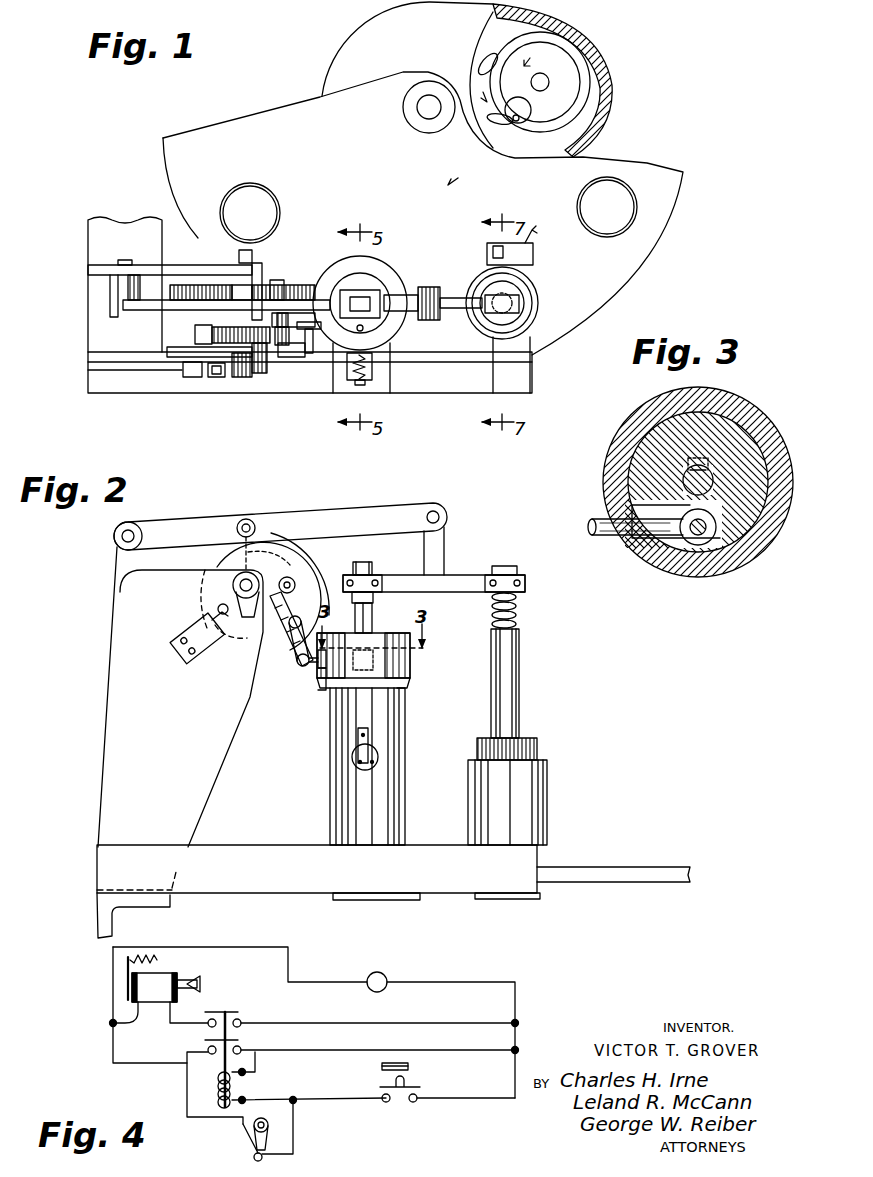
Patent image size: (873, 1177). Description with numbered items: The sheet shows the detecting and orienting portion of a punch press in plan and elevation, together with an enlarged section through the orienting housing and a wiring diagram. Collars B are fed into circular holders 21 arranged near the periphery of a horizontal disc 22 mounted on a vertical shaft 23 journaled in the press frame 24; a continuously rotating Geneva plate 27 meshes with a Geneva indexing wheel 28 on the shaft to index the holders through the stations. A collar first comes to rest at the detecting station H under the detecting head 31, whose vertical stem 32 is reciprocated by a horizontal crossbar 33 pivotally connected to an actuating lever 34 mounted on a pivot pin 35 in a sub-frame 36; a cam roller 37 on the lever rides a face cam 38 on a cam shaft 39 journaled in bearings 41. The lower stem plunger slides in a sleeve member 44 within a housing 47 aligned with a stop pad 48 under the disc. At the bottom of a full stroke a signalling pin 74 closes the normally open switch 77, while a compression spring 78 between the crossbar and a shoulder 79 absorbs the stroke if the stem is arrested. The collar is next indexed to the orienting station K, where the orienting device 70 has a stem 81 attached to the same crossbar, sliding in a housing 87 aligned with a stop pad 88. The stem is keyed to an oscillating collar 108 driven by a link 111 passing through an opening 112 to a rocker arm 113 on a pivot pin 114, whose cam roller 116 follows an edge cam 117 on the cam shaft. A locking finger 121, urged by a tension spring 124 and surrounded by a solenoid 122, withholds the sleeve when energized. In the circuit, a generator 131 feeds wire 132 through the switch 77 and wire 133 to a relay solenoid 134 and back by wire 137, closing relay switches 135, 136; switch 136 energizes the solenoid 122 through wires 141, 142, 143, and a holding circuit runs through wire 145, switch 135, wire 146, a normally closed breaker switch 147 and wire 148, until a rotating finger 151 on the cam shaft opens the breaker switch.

In FIG. 1, the holder 21 is at (262, 183).
In FIG. 1, the disc 22 is at (640, 272).
In FIG. 2, the disc 22 is at (618, 872).
In FIG. 1, the vertical shaft 23 is at (417, 108).
In FIG. 1, the frame 24 is at (367, 47).
In FIG. 1, the Geneva plate 27 is at (580, 112).
In FIG. 1, the Geneva indexing wheel 28 is at (495, 85).
In FIG. 1, the detecting head 31 is at (532, 306).
In FIG. 2, the detecting head 31 is at (528, 690).
In FIG. 1, the stem 32 is at (500, 306).
In FIG. 2, the stem 32 is at (506, 662).
In FIG. 1, the crossbar 33 is at (452, 296).
In FIG. 2, the crossbar 33 is at (453, 583).
In FIG. 1, the actuating lever 34 is at (277, 308).
In FIG. 2, the actuating lever 34 is at (325, 523).
In FIG. 1, the pivot pin 35 is at (124, 260).
In FIG. 2, the pivot pin 35 is at (120, 538).
In FIG. 1, the sub-frame 36 is at (88, 320).
In FIG. 2, the sub-frame 36 is at (128, 586).
In FIG. 1, the cam roller 37 is at (262, 283).
In FIG. 2, the cam roller 37 is at (247, 518).
In FIG. 1, the face cam 38 is at (190, 283).
In FIG. 2, the face cam 38 is at (308, 548).
In FIG. 1, the cam shaft 39 is at (252, 254).
In FIG. 2, the cam shaft 39 is at (233, 586).
In FIG. 4, the cam shaft 39 is at (270, 1118).
In FIG. 1, the bearings 41 is at (228, 272).
In FIG. 2, the bearings 41 is at (258, 566).
In FIG. 1, the sleeve member 44 is at (520, 292).
In FIG. 2, the sleeve member 44 is at (522, 750).
In FIG. 2, the housing 47 is at (535, 815).
In FIG. 2, the stop pad 48 is at (543, 896).
In FIG. 1, the orienting device 70 is at (382, 353).
In FIG. 2, the orienting device 70 is at (410, 722).
In FIG. 4, the signalling pin 74 is at (410, 1066).
In FIG. 4, the electric switch 77 is at (414, 1088).
In FIG. 2, the compression spring 78 is at (518, 608).
In FIG. 2, the shoulder 79 is at (504, 634).
In FIG. 2, the orienting stem 81 is at (358, 617).
In FIG. 3, the orienting stem 81 is at (684, 476).
In FIG. 2, the housing 87 is at (388, 808).
In FIG. 3, the housing 87 is at (750, 414).
In FIG. 2, the stop pad 88 is at (362, 901).
In FIG. 3, the oscillating collar 108 is at (667, 430).
In FIG. 1, the link 111 is at (312, 336).
In FIG. 2, the link 111 is at (322, 676).
In FIG. 3, the link 111 is at (615, 527).
In FIG. 2, the opening 112 is at (325, 690).
In FIG. 3, the opening 112 is at (648, 550).
In FIG. 1, the rocker arm 113 is at (290, 292).
In FIG. 2, the rocker arm 113 is at (306, 661).
In FIG. 1, the pivot pin 114 is at (300, 357).
In FIG. 2, the pivot pin 114 is at (293, 624).
In FIG. 1, the cam roller 116 is at (282, 330).
In FIG. 2, the cam roller 116 is at (296, 583).
In FIG. 1, the edge cam 117 is at (200, 336).
In FIG. 2, the edge cam 117 is at (242, 562).
In FIG. 2, the locking finger 121 is at (362, 758).
In FIG. 4, the locking finger 121 is at (203, 984).
In FIG. 1, the solenoid 122 is at (375, 374).
In FIG. 2, the solenoid 122 is at (360, 768).
In FIG. 4, the solenoid 122 is at (150, 983).
In FIG. 1, the tension spring 124 is at (368, 362).
In FIG. 2, the tension spring 124 is at (368, 737).
In FIG. 4, the tension spring 124 is at (147, 962).
In FIG. 4, the generator 131 is at (387, 973).
In FIG. 4, the wire 132 is at (480, 980).
In FIG. 4, the wire 133 is at (268, 1095).
In FIG. 4, the relay solenoid 134 is at (218, 1083).
In FIG. 4, the relay switch 135 is at (240, 1048).
In FIG. 4, the relay switch 136 is at (228, 1012).
In FIG. 4, the wire 137 is at (113, 980).
In FIG. 4, the circuit wire 141 is at (130, 1027).
In FIG. 4, the wire 142 is at (193, 1027).
In FIG. 4, the wire 143 is at (405, 1018).
In FIG. 4, the wire 145 is at (438, 1048).
In FIG. 4, the wire 146 is at (187, 1100).
In FIG. 1, the breaker switch 147 is at (195, 378).
In FIG. 2, the breaker switch 147 is at (205, 630).
In FIG. 4, the breaker switch 147 is at (240, 1130).
In FIG. 4, the wire 148 is at (296, 1128).
In FIG. 2, the rotating finger 151 is at (218, 609).
In FIG. 4, the rotating finger 151 is at (270, 1150).
In FIG. 1, the collar B is at (236, 192).
In FIG. 4, the collar B is at (536, 1078).
In FIG. 1, the detecting station H is at (540, 292).
In FIG. 2, the detecting station H is at (562, 781).
In FIG. 1, the orienting station K is at (403, 347).
In FIG. 2, the orienting station K is at (408, 771).